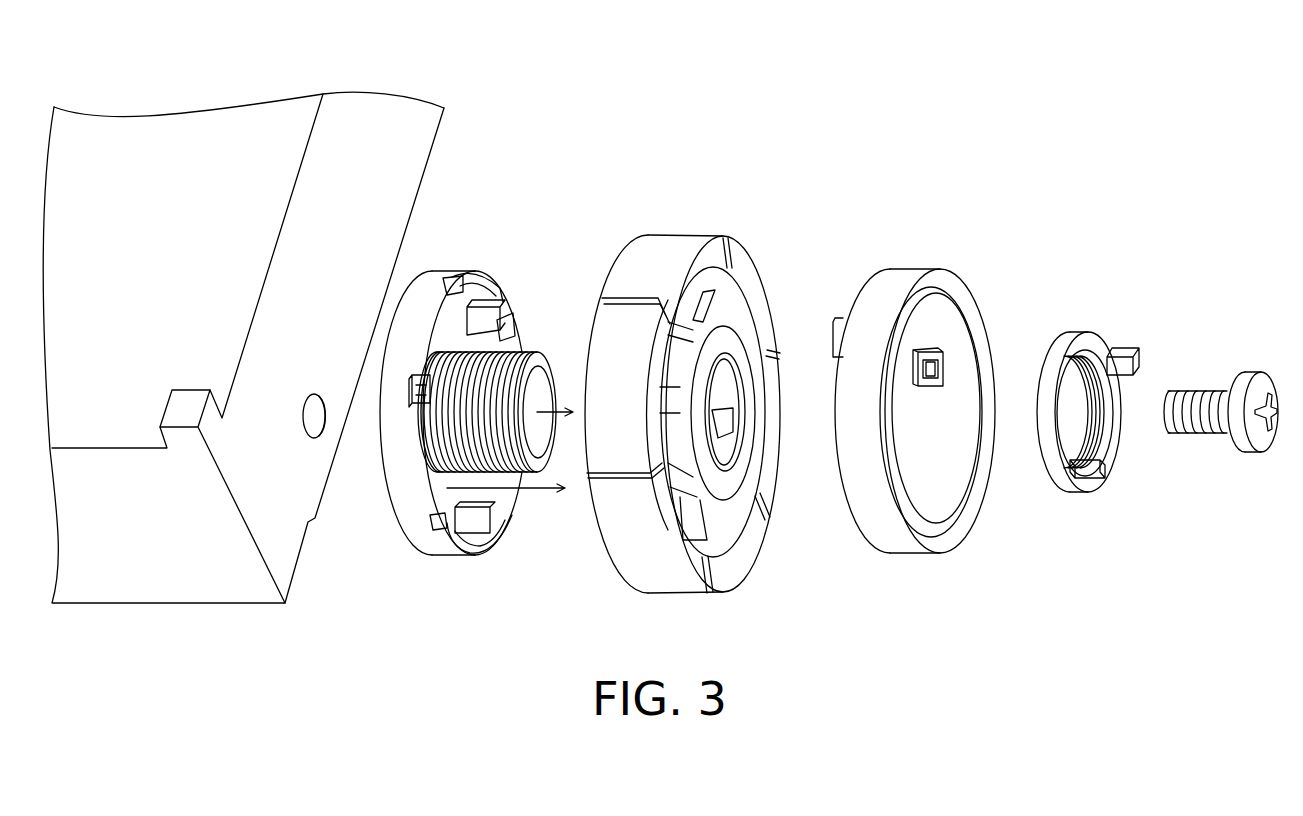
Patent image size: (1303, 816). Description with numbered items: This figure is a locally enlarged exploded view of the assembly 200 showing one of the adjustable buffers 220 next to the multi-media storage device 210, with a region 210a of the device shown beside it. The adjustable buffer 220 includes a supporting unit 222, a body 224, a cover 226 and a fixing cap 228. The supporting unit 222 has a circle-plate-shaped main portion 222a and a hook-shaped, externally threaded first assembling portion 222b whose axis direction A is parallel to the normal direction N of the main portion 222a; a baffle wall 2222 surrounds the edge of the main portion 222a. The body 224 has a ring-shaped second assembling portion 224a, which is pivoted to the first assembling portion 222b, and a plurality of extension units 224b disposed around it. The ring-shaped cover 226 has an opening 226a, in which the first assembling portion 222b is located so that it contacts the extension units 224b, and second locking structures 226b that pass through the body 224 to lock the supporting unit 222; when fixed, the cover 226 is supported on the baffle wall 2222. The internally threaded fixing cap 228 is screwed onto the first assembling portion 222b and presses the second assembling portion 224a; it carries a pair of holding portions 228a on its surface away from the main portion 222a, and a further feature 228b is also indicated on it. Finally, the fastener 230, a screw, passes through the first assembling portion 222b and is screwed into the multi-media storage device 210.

The lens actuating module 200 is at (1271, 57).
The multi-media storage device 210 is at (222, 137).
The side surface of base 210a is at (363, 132).
The adjustable buffer 220 is at (1132, 114).
The supporting unit 222 is at (608, 158).
The main portion 222a is at (445, 292).
The first assembling portion 222b is at (527, 352).
The baffle wall 2222 is at (407, 520).
The body 224 is at (790, 158).
The second assembling portion 224a is at (727, 343).
The extension units 224b is at (668, 242).
The cover 226 is at (1017, 158).
The opening 226a is at (915, 413).
The second locking structures 226b is at (927, 348).
The fixing cap 228 is at (1182, 158).
The holding portions 228a is at (1120, 350).
The threaded hole of nut ring 228b is at (1085, 343).
The fasteners 230 is at (1240, 378).